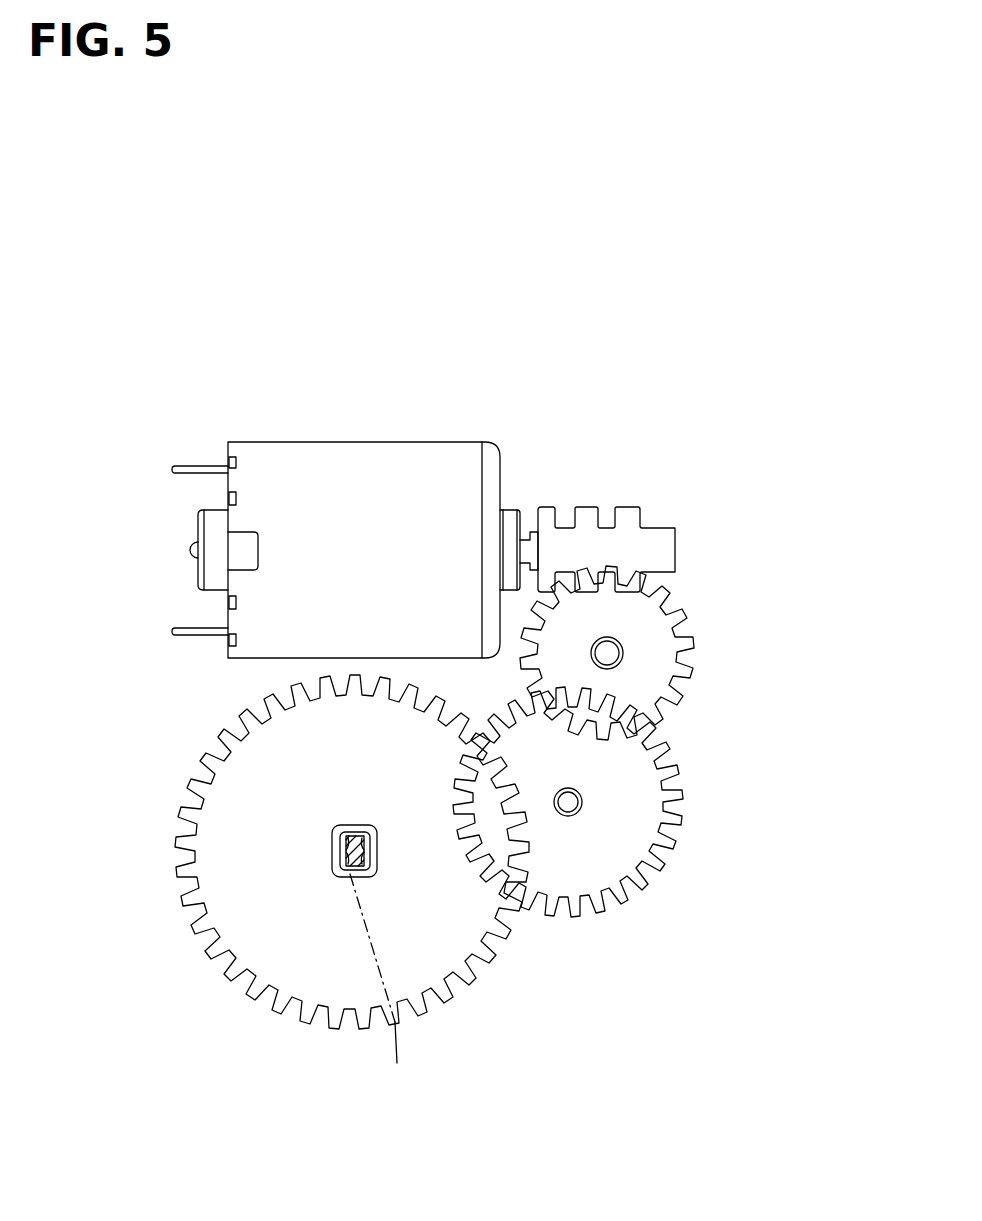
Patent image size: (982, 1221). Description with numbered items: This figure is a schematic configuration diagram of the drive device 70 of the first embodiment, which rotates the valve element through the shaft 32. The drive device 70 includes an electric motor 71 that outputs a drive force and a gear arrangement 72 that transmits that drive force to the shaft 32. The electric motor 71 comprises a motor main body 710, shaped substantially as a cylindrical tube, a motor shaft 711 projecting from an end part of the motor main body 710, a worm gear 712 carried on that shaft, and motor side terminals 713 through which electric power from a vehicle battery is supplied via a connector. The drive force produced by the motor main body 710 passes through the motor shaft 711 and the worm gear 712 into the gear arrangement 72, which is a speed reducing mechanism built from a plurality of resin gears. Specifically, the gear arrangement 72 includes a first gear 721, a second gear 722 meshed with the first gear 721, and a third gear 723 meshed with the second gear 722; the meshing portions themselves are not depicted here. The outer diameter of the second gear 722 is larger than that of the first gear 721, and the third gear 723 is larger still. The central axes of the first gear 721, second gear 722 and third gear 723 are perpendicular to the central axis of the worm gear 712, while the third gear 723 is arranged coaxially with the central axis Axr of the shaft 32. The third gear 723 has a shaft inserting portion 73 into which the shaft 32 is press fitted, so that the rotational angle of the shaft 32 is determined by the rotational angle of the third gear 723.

The drive device 70 is at (297, 412).
The electric motor 71 is at (352, 472).
The motor main body 710 is at (453, 462).
The motor shaft 711 is at (524, 536).
The worm gear 712 is at (623, 506).
The motor side terminals 713 is at (183, 466).
The gear arrangement 72 is at (737, 733).
The first gear 721 is at (688, 630).
The second gear 722 is at (682, 785).
The third gear 723 is at (493, 955).
The shaft 32 is at (332, 842).
The shaft inserting portion 73 is at (340, 874).
The central axis of the shaft Axr is at (383, 982).